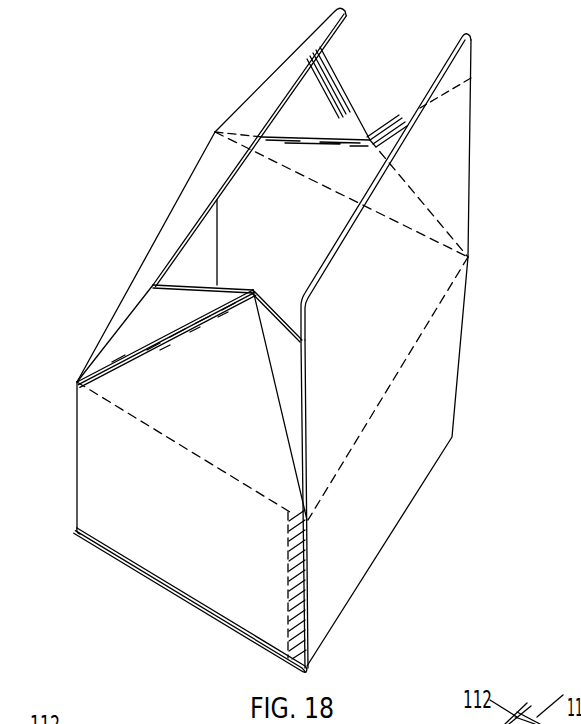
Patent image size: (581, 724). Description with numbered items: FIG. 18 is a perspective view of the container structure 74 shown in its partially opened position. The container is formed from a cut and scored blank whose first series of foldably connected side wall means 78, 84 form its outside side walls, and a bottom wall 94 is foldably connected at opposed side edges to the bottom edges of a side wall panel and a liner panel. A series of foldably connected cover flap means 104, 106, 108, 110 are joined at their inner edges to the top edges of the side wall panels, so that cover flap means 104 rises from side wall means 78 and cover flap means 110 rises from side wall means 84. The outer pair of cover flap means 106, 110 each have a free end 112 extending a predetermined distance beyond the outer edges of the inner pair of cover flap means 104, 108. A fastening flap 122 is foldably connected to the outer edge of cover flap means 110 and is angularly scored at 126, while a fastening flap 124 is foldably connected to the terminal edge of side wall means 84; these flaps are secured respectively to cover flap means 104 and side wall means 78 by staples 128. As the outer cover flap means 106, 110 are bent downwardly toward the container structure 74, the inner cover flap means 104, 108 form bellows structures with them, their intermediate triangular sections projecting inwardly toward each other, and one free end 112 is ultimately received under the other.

The container structure 74 is at (472, 228).
The side wall means 78 is at (225, 597).
The side wall means 84 is at (410, 478).
The bottom wall 94 is at (112, 552).
The cover flap means 104 is at (122, 338).
The cover flap means 106 is at (205, 167).
The cover flap means 108 is at (389, 152).
The cover flap means 110 is at (392, 282).
The free end 112 is at (227, 190).
The fastening flap 122 is at (290, 382).
The fastening flap 124 is at (308, 622).
The angular score 126 is at (183, 447).
The staple 128 is at (306, 423).